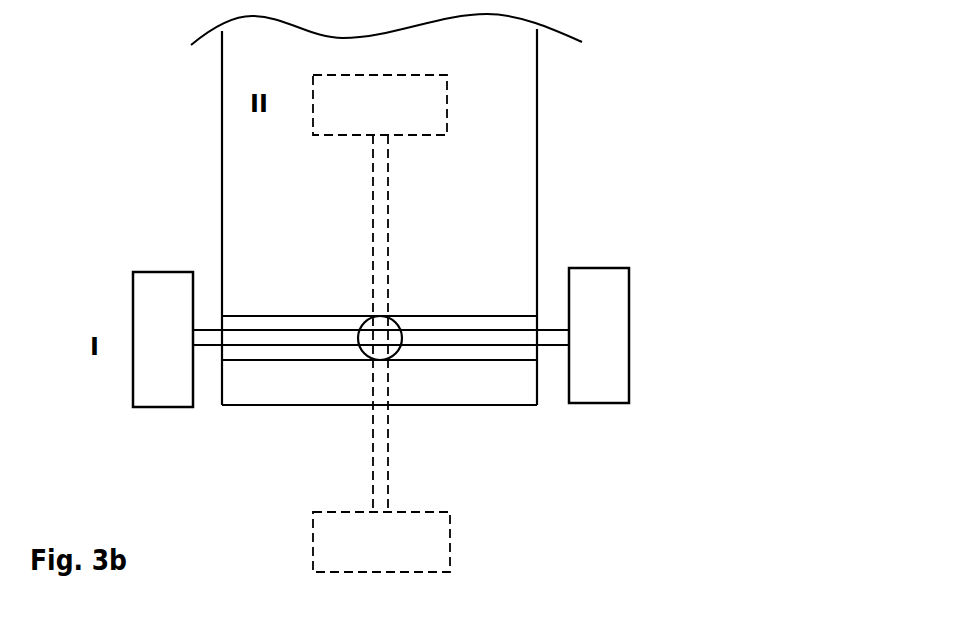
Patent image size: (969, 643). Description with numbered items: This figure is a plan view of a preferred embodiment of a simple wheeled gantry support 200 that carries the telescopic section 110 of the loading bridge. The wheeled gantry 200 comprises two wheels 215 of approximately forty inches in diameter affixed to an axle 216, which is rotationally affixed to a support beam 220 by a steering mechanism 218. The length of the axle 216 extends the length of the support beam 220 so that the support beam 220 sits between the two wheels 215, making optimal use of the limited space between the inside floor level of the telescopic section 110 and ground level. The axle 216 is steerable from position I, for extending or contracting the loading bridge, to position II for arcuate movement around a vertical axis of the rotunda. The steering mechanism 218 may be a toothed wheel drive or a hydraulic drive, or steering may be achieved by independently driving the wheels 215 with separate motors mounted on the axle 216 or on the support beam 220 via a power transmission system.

The third telescopic section 110 is at (238, 198).
The wheeled gantry support 200 is at (658, 43).
The wheels 215 is at (147, 290).
The axle 216 is at (493, 330).
The steering mechanism 218 is at (393, 357).
The support beam 220 is at (495, 315).